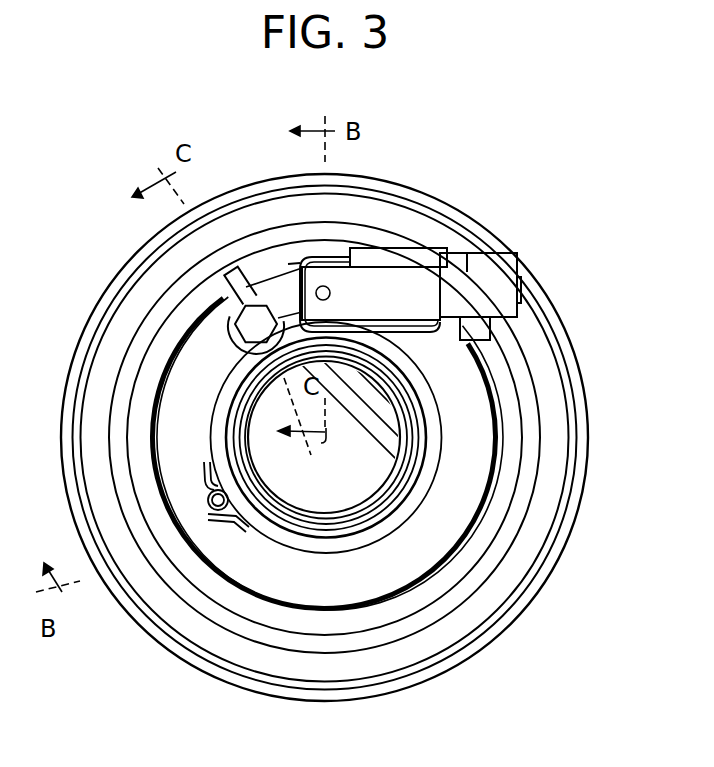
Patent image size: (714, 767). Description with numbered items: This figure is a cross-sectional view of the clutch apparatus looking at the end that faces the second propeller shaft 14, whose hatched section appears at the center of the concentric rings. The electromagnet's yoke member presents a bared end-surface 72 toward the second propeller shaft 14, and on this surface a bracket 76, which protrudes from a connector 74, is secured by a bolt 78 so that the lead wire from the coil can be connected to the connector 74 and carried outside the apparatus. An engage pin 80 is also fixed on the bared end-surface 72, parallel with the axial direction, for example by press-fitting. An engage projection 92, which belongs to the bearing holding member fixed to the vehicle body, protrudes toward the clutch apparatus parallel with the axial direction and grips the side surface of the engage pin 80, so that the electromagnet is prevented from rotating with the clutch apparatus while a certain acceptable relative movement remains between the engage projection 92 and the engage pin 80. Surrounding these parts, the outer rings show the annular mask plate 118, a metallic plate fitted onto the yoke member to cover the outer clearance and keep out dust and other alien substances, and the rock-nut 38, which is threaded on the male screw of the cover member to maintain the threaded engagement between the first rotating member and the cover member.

The second propeller shaft 14 is at (385, 425).
The rock-nut 38 is at (577, 520).
The bared end-surface 72 is at (230, 380).
The connector 74 is at (468, 268).
The bracket 76 is at (208, 303).
The bolt 78 is at (232, 326).
The engage pin 80 is at (212, 493).
The engage projection 92 is at (236, 527).
The mask plate 118 is at (490, 600).